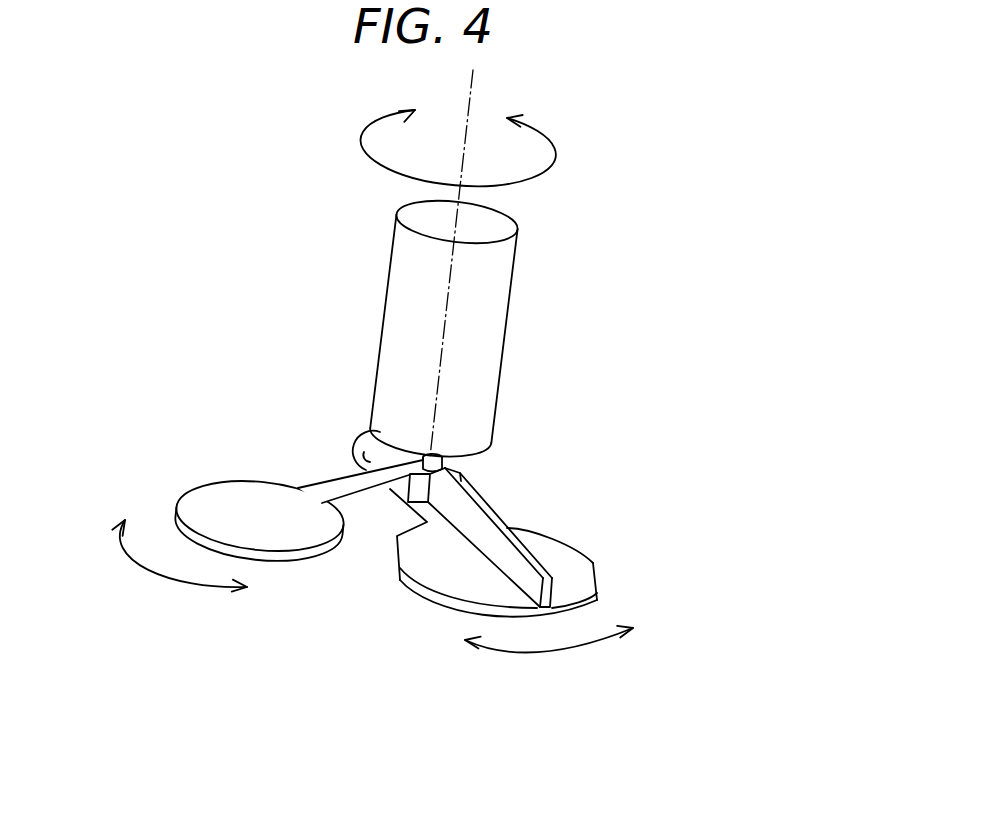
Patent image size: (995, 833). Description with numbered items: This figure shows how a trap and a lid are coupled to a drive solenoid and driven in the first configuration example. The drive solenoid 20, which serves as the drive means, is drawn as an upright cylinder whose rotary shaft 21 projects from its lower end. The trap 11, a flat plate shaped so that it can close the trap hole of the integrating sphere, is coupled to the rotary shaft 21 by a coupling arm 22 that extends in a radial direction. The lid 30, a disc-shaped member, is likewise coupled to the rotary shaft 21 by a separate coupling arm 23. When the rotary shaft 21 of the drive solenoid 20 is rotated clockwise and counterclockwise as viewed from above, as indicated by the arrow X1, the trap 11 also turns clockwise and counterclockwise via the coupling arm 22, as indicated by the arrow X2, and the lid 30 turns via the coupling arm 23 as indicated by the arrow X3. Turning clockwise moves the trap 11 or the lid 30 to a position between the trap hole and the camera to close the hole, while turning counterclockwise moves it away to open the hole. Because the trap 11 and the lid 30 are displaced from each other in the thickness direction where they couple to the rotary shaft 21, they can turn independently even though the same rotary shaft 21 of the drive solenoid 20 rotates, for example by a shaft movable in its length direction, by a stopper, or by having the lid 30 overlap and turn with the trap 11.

The trap 11 is at (573, 547).
The drive solenoid 20 is at (483, 288).
The rotary shaft 21 is at (450, 463).
The coupling arm 22 is at (405, 509).
The coupling arm 23 is at (335, 481).
The lid 30 is at (223, 503).
The arrow x1 X1 is at (553, 170).
The arrow x2 X2 is at (538, 653).
The arrow x3 X3 is at (155, 568).